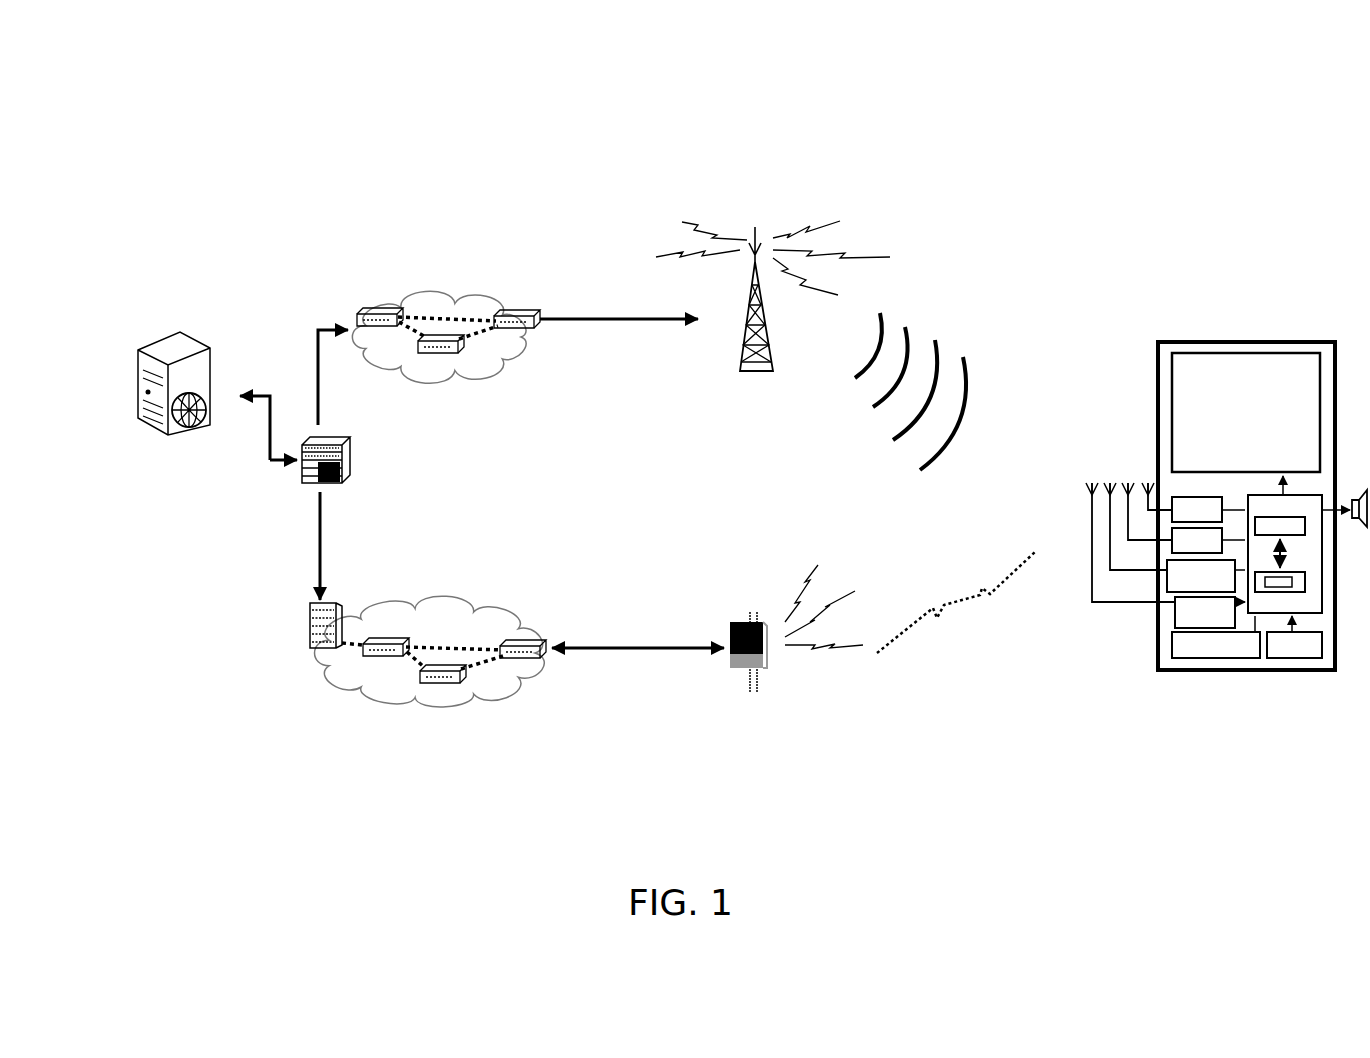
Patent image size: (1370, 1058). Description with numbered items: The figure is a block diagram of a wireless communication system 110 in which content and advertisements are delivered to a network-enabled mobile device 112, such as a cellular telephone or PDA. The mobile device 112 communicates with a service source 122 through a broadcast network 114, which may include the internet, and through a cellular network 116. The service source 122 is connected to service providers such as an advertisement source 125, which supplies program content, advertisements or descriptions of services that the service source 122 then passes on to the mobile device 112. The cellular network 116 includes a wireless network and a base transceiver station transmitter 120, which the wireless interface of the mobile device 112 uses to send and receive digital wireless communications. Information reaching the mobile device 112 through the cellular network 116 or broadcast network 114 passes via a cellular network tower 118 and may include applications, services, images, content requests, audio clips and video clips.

The wireless communication system 110 is at (740, 108).
The mobile device 112 is at (1213, 672).
The broadcast network 114 is at (480, 307).
The cellular network 116 is at (492, 673).
The cellular network tower 118 is at (773, 238).
The base transceiver station transmitter 120 is at (755, 653).
The service source 122 is at (350, 461).
The advertisement source 125 is at (208, 343).